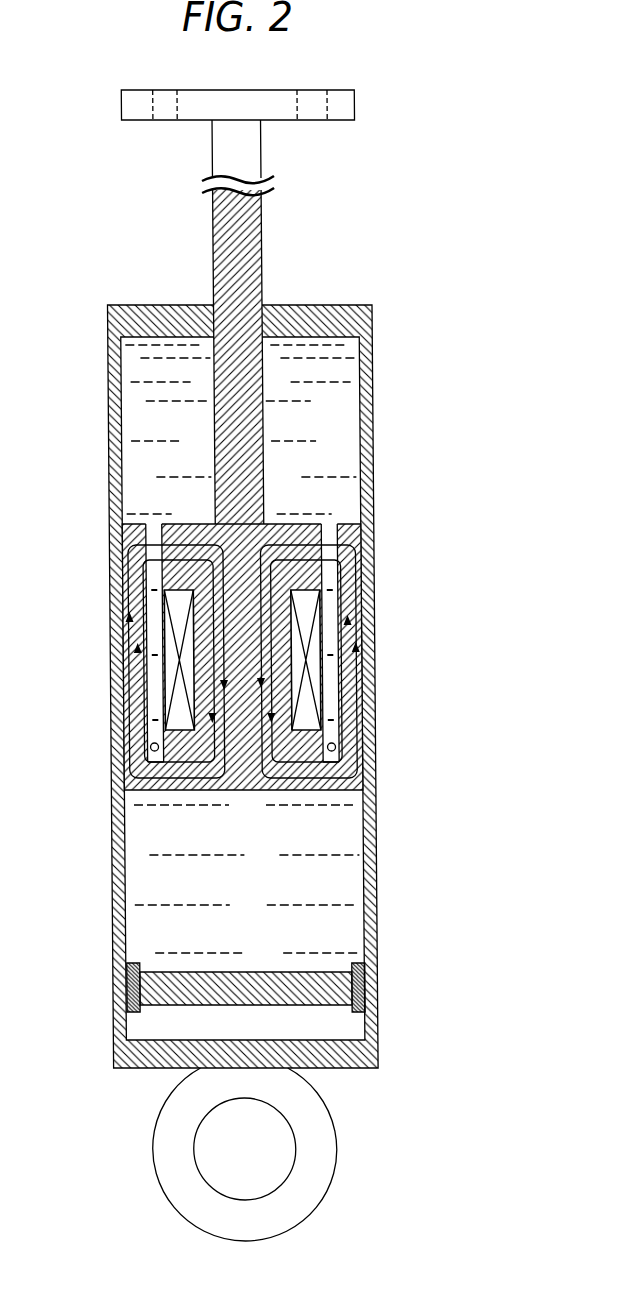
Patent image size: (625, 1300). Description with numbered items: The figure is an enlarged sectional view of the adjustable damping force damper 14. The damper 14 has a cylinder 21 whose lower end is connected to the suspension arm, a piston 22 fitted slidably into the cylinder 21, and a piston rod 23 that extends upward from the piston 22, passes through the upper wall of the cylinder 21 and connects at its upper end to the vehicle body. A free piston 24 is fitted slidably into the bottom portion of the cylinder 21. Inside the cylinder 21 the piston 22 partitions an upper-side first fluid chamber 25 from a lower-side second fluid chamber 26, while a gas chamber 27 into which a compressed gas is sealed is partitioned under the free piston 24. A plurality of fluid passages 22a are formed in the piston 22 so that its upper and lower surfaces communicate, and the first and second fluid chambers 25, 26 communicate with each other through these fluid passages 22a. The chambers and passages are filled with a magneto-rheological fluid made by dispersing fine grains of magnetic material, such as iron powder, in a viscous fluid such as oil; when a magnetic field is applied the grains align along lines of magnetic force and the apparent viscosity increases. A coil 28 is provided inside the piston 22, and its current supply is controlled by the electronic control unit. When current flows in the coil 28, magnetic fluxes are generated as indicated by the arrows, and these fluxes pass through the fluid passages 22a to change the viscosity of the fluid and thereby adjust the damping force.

The damper 14 is at (265, 665).
The cylinder 21 is at (370, 447).
The piston 22 is at (250, 619).
The fluid passages 22a is at (146, 750).
The piston rod 23 is at (228, 420).
The free piston 24 is at (262, 985).
The first fluid chamber 25 is at (335, 432).
The second fluid chamber 26 is at (263, 894).
The gas chamber 27 is at (264, 1036).
The coil 28 is at (177, 600).